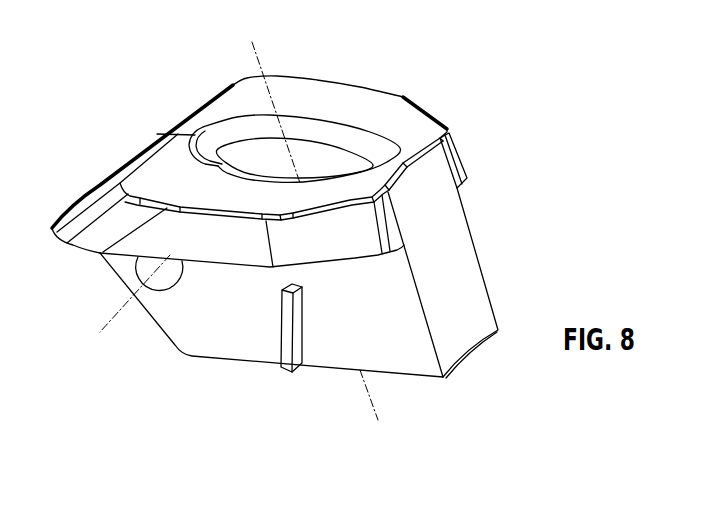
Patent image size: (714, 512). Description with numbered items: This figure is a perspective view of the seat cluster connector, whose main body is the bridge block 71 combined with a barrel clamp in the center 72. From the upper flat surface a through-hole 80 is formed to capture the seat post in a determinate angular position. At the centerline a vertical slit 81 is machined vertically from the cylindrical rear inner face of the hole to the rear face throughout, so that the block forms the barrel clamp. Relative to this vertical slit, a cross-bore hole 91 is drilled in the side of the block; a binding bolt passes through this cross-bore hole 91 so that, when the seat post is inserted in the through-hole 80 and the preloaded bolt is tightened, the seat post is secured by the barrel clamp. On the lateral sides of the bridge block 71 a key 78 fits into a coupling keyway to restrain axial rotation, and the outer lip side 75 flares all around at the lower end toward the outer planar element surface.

The bridge block 71 is at (448, 288).
The barrel clamp in the center 72 is at (168, 157).
The outer lip side 75 is at (213, 263).
The key 78 is at (286, 364).
The through-hole 80 is at (307, 155).
The vertical slit 81 is at (202, 137).
The cross-bore hole 91 is at (137, 299).